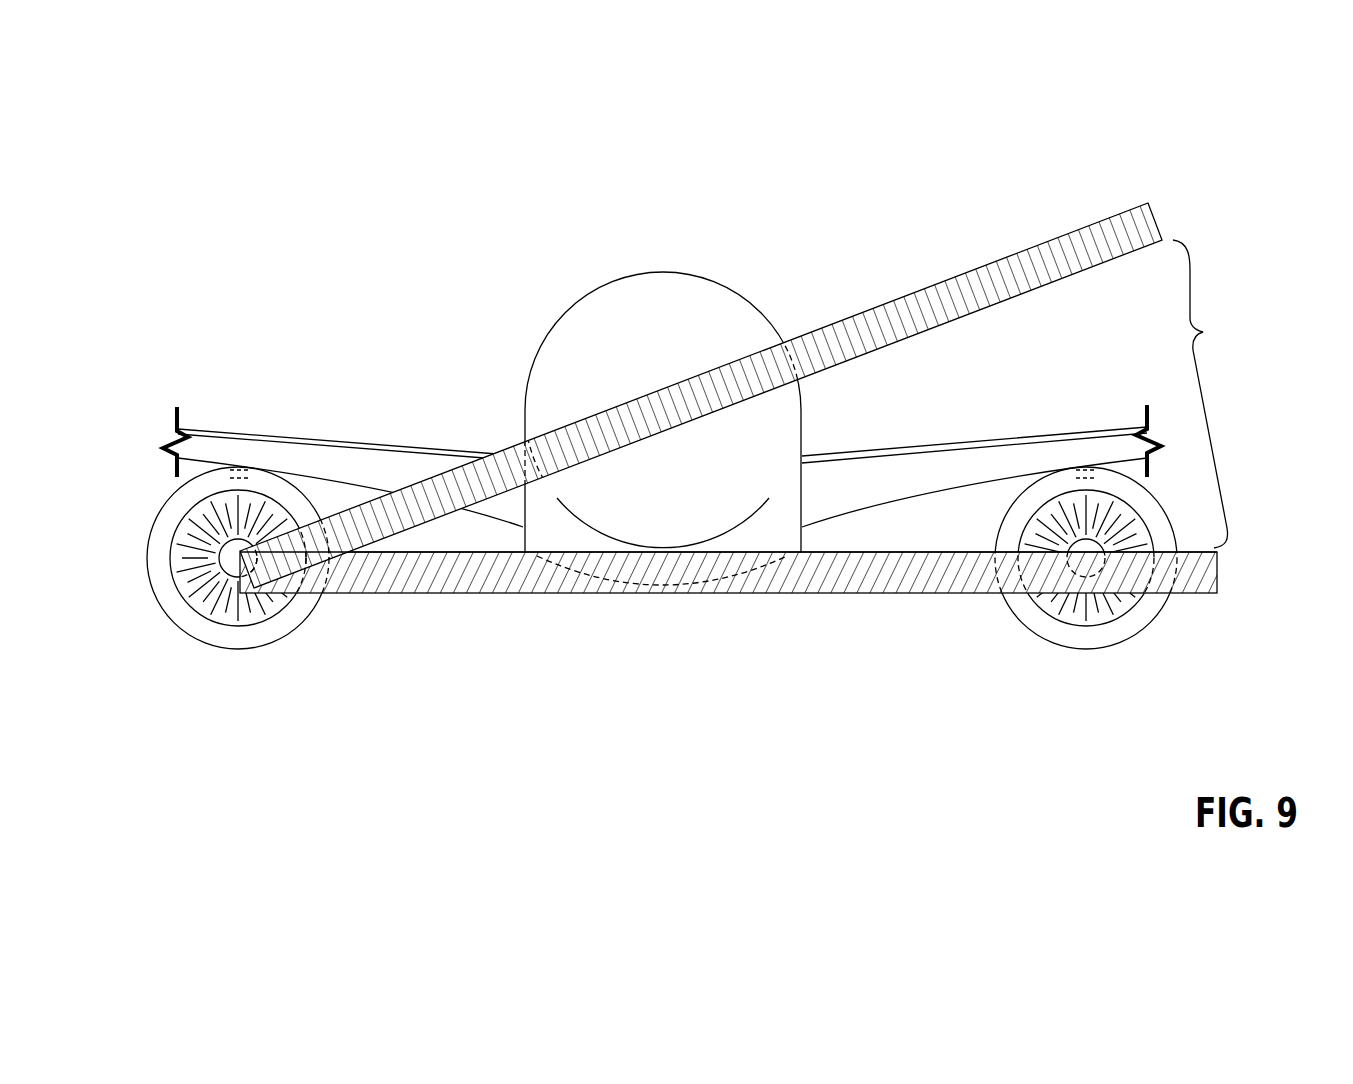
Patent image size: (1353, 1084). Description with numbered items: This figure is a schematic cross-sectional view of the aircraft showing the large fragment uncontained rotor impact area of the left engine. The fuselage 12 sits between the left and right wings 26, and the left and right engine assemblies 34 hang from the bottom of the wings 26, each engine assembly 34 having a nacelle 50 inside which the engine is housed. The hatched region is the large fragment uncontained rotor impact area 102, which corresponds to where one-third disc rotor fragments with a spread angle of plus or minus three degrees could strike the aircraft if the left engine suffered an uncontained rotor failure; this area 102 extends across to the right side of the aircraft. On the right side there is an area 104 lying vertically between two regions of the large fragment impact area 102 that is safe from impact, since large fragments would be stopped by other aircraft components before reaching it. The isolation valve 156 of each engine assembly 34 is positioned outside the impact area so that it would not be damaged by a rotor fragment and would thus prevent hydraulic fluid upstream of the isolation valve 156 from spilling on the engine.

The fuselage 12 is at (533, 390).
The wing 26 is at (299, 447).
The engine assembly 34 is at (153, 477).
The nacelle 50 is at (163, 522).
The large fragment uncontained rotor impact area 102 is at (1132, 210).
The area 104 is at (1216, 394).
The isolation valve 156 is at (237, 477).